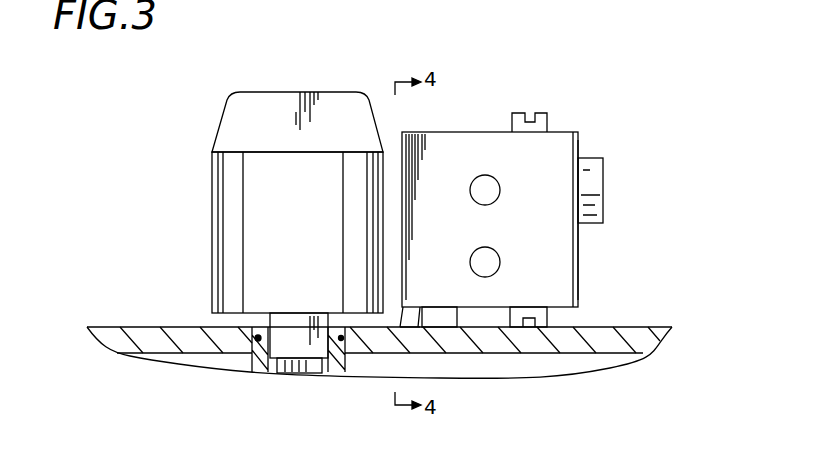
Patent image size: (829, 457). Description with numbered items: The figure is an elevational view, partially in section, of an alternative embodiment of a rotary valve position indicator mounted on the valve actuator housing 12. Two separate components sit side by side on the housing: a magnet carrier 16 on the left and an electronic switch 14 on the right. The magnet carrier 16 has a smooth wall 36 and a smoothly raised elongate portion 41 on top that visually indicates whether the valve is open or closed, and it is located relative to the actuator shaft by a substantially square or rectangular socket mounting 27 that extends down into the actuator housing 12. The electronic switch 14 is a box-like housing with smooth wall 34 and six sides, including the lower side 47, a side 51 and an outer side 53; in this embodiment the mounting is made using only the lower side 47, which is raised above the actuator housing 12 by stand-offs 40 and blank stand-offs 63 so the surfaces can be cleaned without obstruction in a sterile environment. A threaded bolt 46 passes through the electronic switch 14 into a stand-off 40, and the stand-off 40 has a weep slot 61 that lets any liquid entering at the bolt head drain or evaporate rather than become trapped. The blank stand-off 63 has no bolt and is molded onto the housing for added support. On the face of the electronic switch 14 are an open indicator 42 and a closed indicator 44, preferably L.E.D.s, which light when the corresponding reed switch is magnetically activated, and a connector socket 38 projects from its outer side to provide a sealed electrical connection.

The valve actuator housing 12 is at (655, 337).
The electronic switch 14 is at (572, 90).
The magnet carrier 16 is at (178, 136).
The socket mounting 27 is at (290, 342).
The smooth wall 34 is at (226, 222).
The smooth wall 36 is at (577, 135).
The connector socket 38 is at (605, 190).
The stand-off 40 is at (513, 327).
The raised elongate portion 41 is at (277, 107).
The open indicator 42 is at (497, 186).
The closed indicator 44 is at (498, 256).
The threaded bolt 46 is at (521, 112).
The lower side 47 is at (407, 325).
The side 51 is at (398, 160).
The outer side 53 is at (581, 260).
The weep slot 61 is at (530, 327).
The blank stand-off 63 is at (445, 320).